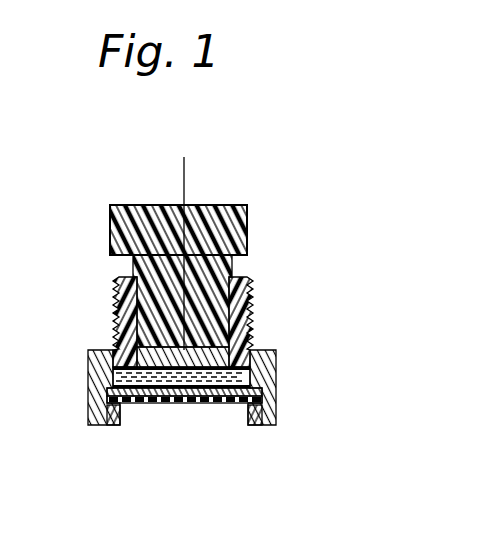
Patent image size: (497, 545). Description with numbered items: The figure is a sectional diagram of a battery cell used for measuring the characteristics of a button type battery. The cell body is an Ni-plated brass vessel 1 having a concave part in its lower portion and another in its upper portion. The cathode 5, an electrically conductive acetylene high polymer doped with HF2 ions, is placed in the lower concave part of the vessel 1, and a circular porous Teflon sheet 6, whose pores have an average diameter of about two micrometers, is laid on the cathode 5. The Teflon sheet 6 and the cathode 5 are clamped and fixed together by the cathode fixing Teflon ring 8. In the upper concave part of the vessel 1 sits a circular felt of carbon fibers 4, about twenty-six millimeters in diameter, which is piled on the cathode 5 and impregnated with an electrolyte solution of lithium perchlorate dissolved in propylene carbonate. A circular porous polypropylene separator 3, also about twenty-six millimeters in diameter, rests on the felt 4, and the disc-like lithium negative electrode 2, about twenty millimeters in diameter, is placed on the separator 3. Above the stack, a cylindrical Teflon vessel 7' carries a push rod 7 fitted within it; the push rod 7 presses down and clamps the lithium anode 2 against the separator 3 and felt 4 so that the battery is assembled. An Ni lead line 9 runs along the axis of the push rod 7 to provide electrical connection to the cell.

The Ni-plated brass vessel 1 is at (283, 423).
The lithium negative electrode 2 is at (207, 347).
The porous polypropylene separator 3 is at (255, 338).
The felt of carbon fibers 4 is at (252, 383).
The cathode 5 is at (265, 392).
The Teflon sheet 6 is at (265, 400).
The push rod 7 is at (197, 225).
The cylindrical Teflon vessel 7' is at (208, 309).
The cathode fixing Teflon ring 8 is at (252, 416).
The Ni lead line 9 is at (184, 177).